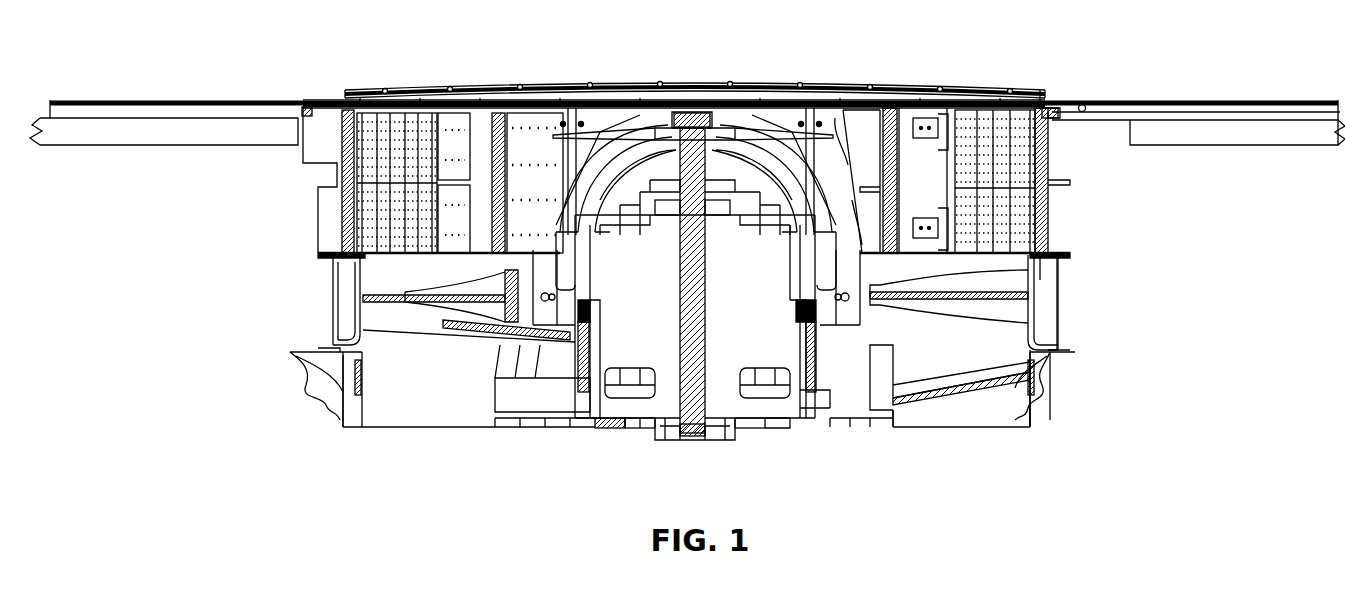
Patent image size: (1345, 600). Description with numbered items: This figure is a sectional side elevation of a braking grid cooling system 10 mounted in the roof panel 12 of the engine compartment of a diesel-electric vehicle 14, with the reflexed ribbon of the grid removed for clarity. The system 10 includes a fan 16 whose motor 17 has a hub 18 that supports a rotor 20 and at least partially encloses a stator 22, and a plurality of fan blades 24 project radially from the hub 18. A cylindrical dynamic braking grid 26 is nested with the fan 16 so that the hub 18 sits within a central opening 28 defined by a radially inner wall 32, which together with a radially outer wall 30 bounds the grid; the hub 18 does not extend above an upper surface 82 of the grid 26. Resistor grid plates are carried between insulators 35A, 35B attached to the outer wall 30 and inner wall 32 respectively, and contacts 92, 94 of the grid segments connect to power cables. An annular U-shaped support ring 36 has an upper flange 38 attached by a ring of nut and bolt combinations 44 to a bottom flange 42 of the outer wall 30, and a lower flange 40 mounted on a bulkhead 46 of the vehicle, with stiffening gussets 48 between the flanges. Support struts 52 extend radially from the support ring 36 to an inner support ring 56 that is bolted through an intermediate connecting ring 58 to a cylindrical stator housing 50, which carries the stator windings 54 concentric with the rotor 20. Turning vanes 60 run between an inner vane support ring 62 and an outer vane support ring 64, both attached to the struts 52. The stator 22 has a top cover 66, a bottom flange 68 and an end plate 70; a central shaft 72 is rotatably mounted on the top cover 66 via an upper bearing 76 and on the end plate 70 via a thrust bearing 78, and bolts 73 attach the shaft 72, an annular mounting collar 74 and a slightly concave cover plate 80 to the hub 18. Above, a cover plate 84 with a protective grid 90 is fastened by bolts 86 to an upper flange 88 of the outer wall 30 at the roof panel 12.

The braking grid cooling system 10 is at (845, 78).
The roof panel 12 is at (687, 150).
The diesel-electric vehicle 14 is at (1168, 147).
The fan 16 is at (695, 52).
The motor 17 is at (585, 82).
The hub 18 is at (630, 142).
The rotor 20 is at (600, 262).
The stator 22 is at (610, 425).
The fan blades 24 is at (890, 285).
The dynamic braking grid 26 is at (1055, 180).
The central opening 28 is at (527, 117).
The radially outer wall 30 is at (1052, 152).
The radially inner wall 32 is at (878, 130).
The insulator 35A is at (401, 128).
The insulator 35B is at (494, 130).
The support ring 36 is at (1025, 292).
The upper flange 38 is at (322, 260).
The lower flange 40 is at (336, 345).
The bottom flange 42 is at (330, 250).
The nut and bolt combinations 44 is at (1052, 268).
The bulkhead 46 is at (335, 412).
The stiffening gussets 48 is at (1048, 290).
The stator housing 50 is at (603, 333).
The support struts 52 is at (1010, 352).
The stator windings 54 is at (795, 283).
The inner support ring 56 is at (825, 388).
The intermediate connecting ring 58 is at (800, 315).
The turning vanes 60 is at (565, 427).
The inner vane support ring 62 is at (500, 395).
The outer vane support ring 64 is at (322, 340).
The top cover 66 is at (605, 230).
The bottom flange 68 is at (642, 428).
The end plate 70 is at (736, 428).
The central shaft 72 is at (705, 280).
The bolts 73 is at (688, 115).
The annular mounting collar 74 is at (718, 192).
The upper bearing 76 is at (758, 133).
The thrust bearing 78 is at (710, 443).
The cover plate 80 is at (812, 117).
The upper surface 82 is at (1045, 100).
The cover plate 84 is at (1196, 105).
The bolts 86 is at (1122, 105).
The upper flange 88 is at (1062, 106).
The protective grid 90 is at (930, 95).
The contact 92 is at (926, 120).
The contact 94 is at (928, 218).